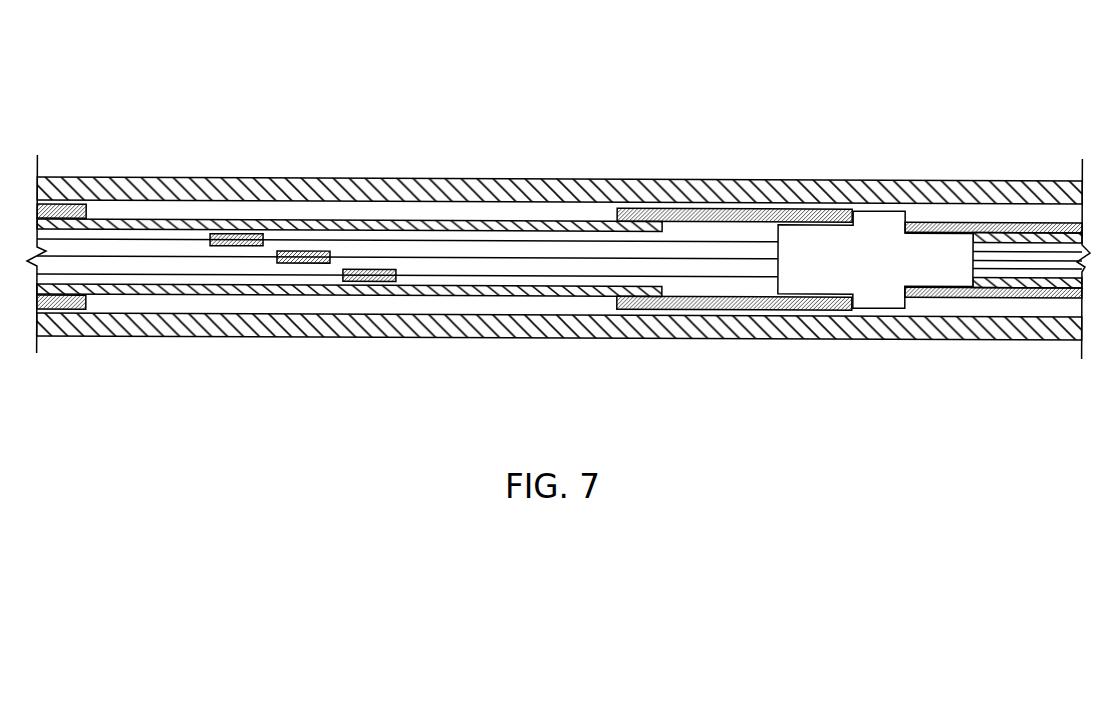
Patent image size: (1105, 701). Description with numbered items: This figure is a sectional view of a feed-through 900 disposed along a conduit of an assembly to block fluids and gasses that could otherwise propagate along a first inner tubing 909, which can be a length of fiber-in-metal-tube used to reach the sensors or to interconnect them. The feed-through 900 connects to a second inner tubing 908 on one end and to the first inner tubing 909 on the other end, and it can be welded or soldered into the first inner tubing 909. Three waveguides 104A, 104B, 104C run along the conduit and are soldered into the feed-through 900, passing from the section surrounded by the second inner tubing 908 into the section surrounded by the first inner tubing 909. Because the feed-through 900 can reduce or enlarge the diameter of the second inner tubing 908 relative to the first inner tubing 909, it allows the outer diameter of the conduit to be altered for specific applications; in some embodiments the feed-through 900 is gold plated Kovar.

The second inner tubing 908 is at (638, 206).
The waveguide 104B is at (705, 239).
The feed-through 900 is at (887, 208).
The first inner tubing 909 is at (975, 219).
The waveguide 104A is at (660, 257).
The waveguide 104C is at (735, 274).